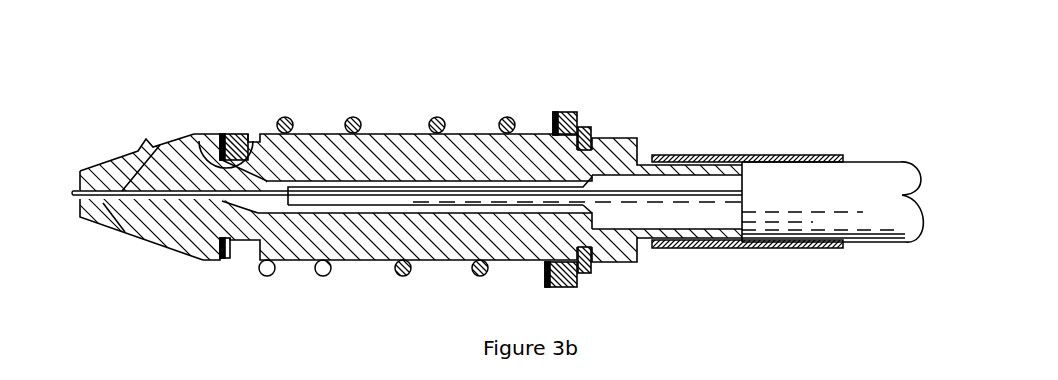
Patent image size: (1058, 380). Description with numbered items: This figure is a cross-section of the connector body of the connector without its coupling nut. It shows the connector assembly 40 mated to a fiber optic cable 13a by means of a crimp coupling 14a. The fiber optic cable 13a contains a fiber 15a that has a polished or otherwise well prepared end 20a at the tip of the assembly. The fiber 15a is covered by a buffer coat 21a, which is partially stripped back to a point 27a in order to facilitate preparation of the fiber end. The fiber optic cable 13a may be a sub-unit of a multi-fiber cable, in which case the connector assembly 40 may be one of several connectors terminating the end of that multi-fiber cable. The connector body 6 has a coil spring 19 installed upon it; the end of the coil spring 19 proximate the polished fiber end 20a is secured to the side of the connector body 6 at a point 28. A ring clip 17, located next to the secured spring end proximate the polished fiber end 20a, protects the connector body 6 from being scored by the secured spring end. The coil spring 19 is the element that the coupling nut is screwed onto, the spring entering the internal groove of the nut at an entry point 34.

The connector assembly 40 is at (580, 53).
The connector body 6 is at (457, 261).
The fiber 15a is at (163, 143).
The point 28 is at (202, 130).
The ring clip 17 is at (228, 258).
The polished fiber end 20a is at (71, 196).
The point 27a is at (290, 187).
The buffer coat 21a is at (365, 196).
The coil spring 19 is at (443, 128).
The entry point 34 is at (582, 127).
The crimp coupling 14a is at (775, 154).
The fiber optic cable 13a is at (877, 162).